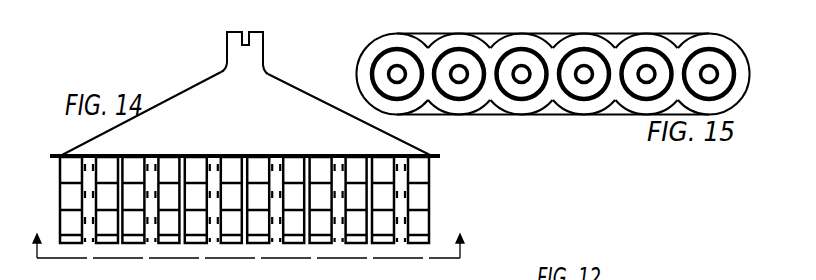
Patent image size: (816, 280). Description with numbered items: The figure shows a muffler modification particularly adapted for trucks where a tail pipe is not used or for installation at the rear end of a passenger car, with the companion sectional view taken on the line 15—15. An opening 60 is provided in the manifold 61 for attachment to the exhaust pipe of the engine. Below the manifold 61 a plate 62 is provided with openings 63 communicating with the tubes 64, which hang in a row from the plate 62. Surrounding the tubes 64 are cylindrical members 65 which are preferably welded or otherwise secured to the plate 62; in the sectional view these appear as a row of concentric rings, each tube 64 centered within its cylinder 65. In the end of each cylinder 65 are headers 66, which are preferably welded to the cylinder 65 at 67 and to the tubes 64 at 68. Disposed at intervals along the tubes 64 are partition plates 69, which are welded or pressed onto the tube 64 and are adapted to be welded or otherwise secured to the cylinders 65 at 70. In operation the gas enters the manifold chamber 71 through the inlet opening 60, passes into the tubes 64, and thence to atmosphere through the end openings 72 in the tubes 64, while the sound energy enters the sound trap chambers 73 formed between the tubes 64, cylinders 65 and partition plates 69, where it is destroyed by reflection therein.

In FIG. 14, the section line 15— 15 is at (250, 236).
In FIG. 14, the opening 60 is at (258, 32).
In FIG. 14, the manifold 61 is at (288, 82).
In FIG. 14, the plate 62 is at (136, 156).
In FIG. 14, the openings 63 is at (215, 156).
In FIG. 14, the tubes 64 is at (286, 172).
In FIG. 15, the tubes 64 is at (581, 103).
In FIG. 14, the cylindrical members 65 is at (429, 203).
In FIG. 15, the cylindrical members 65 is at (463, 99).
In FIG. 14, the headers 66 is at (321, 237).
In FIG. 14, the weld 67 is at (371, 244).
In FIG. 14, the weld 68 is at (410, 244).
In FIG. 14, the partition plates 69 is at (420, 183).
In FIG. 14, the weld 70 is at (60, 188).
In FIG. 14, the manifold chamber 71 is at (190, 106).
In FIG. 14, the end openings 72 is at (334, 244).
In FIG. 14, the sound trap chambers 73 is at (106, 167).